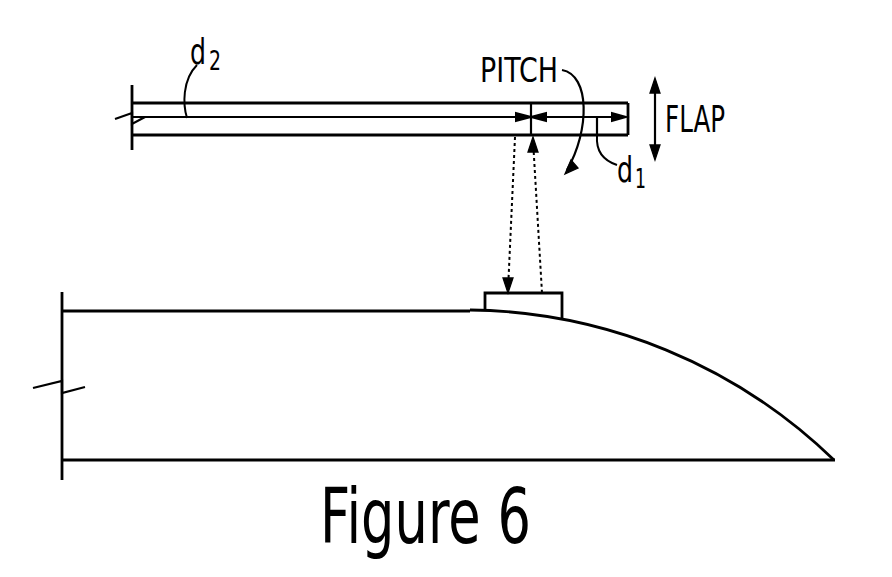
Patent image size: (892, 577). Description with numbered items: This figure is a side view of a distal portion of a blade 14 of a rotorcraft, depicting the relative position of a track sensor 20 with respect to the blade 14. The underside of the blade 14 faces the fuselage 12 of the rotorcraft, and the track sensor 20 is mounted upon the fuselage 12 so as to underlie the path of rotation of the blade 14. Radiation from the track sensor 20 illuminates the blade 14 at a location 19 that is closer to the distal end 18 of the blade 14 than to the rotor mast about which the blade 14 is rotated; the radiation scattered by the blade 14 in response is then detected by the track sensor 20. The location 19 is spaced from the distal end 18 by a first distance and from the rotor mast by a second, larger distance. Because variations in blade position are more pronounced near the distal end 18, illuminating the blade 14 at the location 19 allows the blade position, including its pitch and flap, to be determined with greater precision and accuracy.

The fuselage 12 is at (662, 367).
The blade 14 is at (268, 107).
The distal end 18 is at (634, 100).
The location 19 is at (522, 118).
The track sensor 20 is at (547, 305).